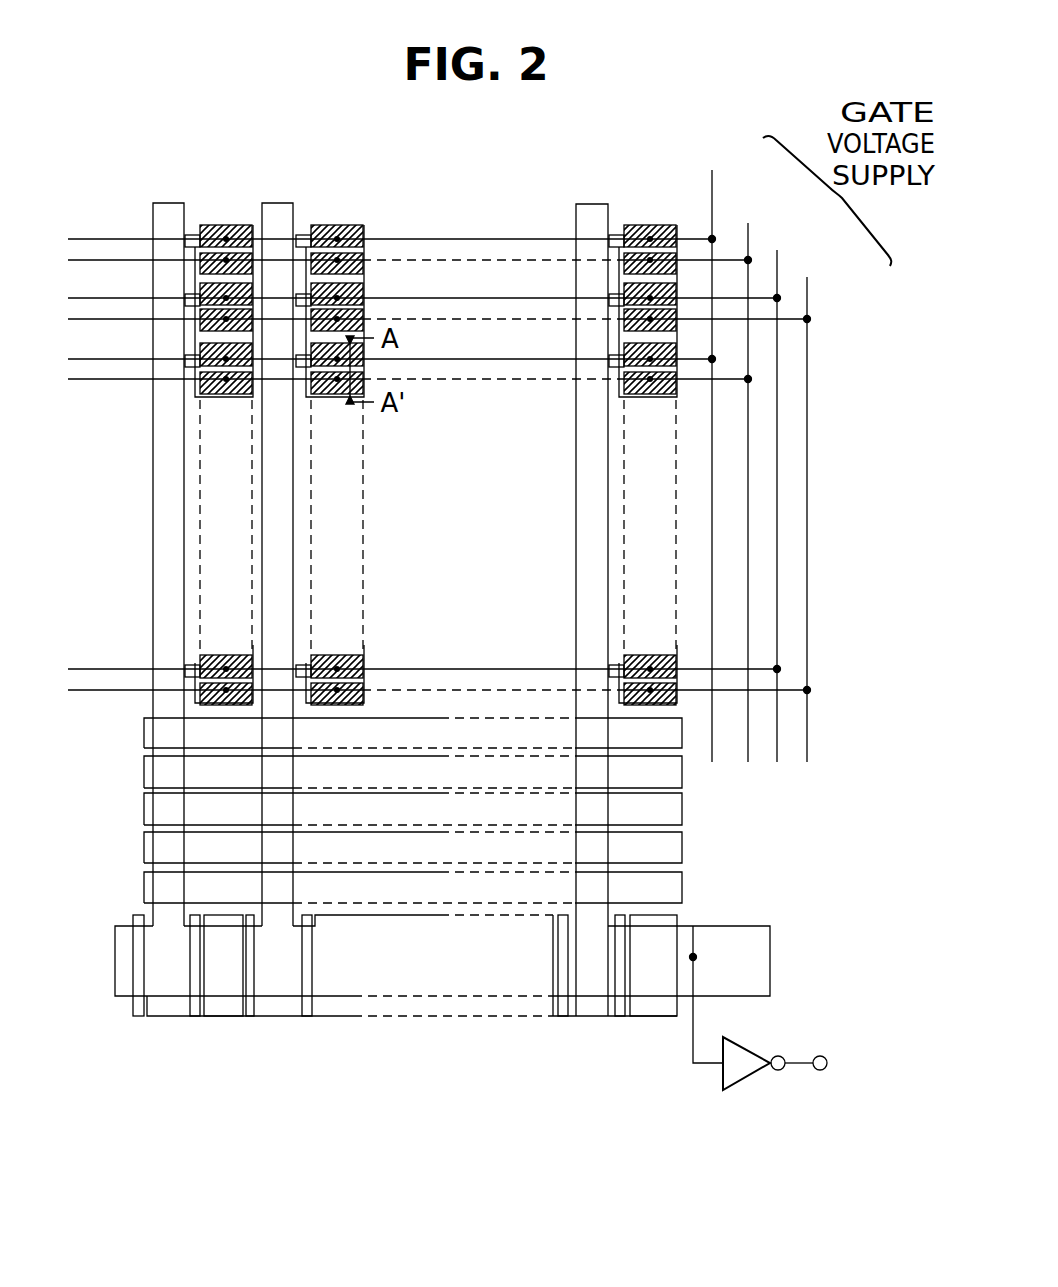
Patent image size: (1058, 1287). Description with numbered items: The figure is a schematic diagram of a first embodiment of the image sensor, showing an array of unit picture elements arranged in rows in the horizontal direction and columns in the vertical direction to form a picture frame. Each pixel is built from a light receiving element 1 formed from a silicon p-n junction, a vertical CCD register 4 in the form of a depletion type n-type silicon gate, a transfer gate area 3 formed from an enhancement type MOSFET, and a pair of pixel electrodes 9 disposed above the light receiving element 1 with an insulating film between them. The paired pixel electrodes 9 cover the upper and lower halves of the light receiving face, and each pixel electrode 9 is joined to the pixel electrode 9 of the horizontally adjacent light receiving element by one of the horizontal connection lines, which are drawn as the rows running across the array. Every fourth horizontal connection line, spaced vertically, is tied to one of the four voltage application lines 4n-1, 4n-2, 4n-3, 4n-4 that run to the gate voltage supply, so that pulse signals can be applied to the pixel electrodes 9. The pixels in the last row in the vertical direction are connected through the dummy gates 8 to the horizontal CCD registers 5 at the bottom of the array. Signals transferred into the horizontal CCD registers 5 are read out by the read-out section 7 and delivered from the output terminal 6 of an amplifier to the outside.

The light receiving element 1 is at (356, 225).
The transfer gate area 3 is at (302, 235).
The vertical CCD register 4 is at (153, 205).
The horizontal CCD register 5 is at (352, 985).
The output terminal 6 is at (821, 1055).
The read-out section 7 is at (693, 957).
The dummy gate 8 is at (690, 718).
The pixel electrode 9 is at (221, 224).
The voltage application line 4n-1 is at (416, 459).
The voltage application line 4n-2 is at (432, 479).
The voltage application line 4n-3 is at (447, 493).
The voltage application line 4n-4 is at (459, 508).